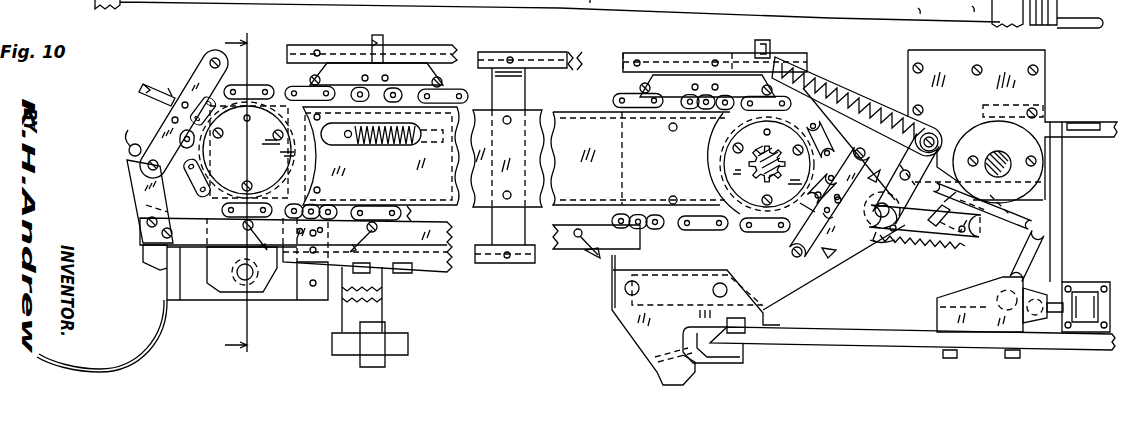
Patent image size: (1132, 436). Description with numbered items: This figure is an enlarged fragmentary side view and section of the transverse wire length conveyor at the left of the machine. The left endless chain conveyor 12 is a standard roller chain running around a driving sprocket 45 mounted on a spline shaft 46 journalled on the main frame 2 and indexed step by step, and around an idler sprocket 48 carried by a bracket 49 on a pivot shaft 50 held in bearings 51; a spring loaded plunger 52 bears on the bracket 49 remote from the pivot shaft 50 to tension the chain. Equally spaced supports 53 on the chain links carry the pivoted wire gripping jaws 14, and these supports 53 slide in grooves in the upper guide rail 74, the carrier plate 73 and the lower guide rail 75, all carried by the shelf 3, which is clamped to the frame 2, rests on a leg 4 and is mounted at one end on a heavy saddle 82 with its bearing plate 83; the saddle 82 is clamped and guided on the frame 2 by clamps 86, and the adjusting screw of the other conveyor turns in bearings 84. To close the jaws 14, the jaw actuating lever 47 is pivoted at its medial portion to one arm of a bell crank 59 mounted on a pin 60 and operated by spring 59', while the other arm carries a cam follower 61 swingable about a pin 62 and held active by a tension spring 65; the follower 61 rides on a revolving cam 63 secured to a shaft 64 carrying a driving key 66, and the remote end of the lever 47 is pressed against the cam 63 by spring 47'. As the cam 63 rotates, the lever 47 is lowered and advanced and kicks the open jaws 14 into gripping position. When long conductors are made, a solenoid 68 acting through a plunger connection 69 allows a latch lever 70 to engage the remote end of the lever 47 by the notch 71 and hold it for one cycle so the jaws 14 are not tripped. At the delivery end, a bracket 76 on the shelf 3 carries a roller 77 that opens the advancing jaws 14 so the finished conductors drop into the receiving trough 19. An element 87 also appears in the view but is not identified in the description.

The main frame 2 is at (867, 338).
The shelf 3 is at (447, 250).
The leg 4 is at (382, 290).
The endless chain conveyor 12 is at (607, 100).
The wire gripping jaws 14 is at (733, 67).
The final conductor receiving trough 19 is at (143, 348).
The driving sprocket 45 is at (753, 170).
The spline shaft 46 is at (743, 212).
The jaw actuating lever 47 is at (857, 127).
The spring 47' is at (895, 176).
The idler sprocket 48 is at (329, 153).
The bracket 49 is at (268, 302).
The pivot shaft 50 is at (232, 284).
The bearings 51 is at (193, 280).
The spring loaded plunger 52 is at (385, 143).
The jaw supports 53 is at (420, 72).
The bell crank 59 is at (919, 251).
The spring 59' is at (792, 47).
The pin 60 is at (883, 217).
The cam follower 61 is at (968, 237).
The pin 62 is at (978, 250).
The revolving cam 63 is at (1023, 170).
The shaft 64 is at (1017, 143).
The tension spring 65 is at (890, 243).
The driving key 66 is at (1003, 156).
The solenoid 68 is at (1083, 297).
The plunger connection 69 is at (1043, 325).
The latch lever 70 is at (1048, 242).
The notch 71 is at (1043, 213).
The carrier plate 73 is at (533, 210).
The upper guide rail 74 is at (585, 46).
The lower guide rail 75 is at (478, 262).
The bracket 76 is at (148, 200).
The roller 77 is at (130, 145).
The saddle 82 is at (647, 342).
The bearing plate 83 is at (797, 280).
The bearings 84 is at (960, 8).
The clamps 86 is at (906, 8).
The guide 87 is at (602, 4).